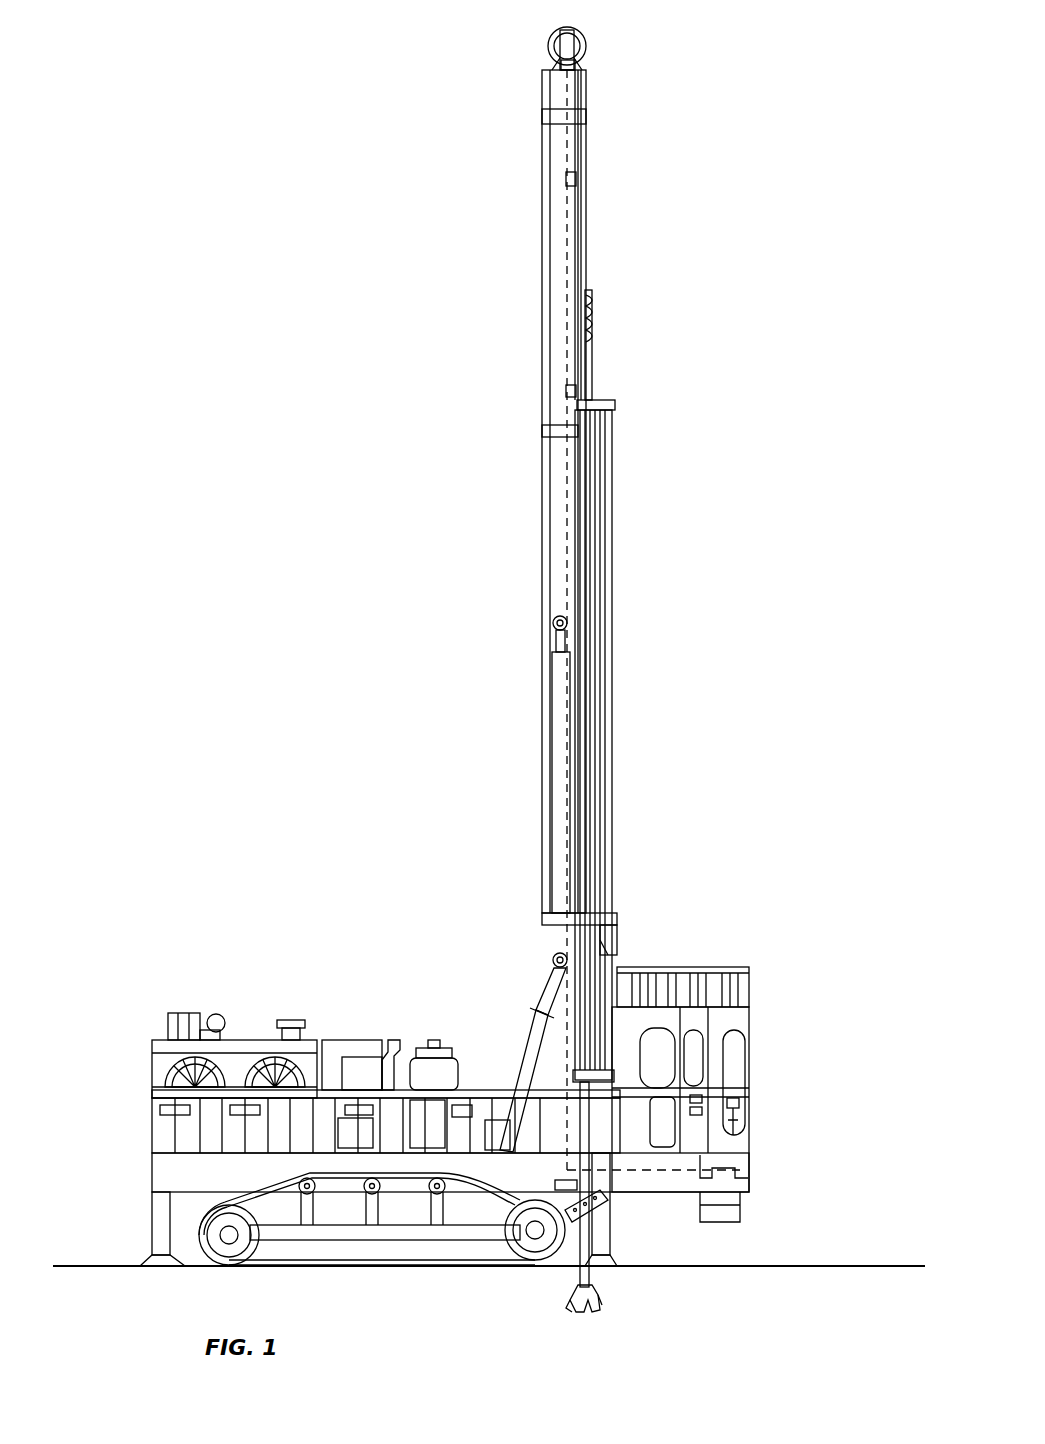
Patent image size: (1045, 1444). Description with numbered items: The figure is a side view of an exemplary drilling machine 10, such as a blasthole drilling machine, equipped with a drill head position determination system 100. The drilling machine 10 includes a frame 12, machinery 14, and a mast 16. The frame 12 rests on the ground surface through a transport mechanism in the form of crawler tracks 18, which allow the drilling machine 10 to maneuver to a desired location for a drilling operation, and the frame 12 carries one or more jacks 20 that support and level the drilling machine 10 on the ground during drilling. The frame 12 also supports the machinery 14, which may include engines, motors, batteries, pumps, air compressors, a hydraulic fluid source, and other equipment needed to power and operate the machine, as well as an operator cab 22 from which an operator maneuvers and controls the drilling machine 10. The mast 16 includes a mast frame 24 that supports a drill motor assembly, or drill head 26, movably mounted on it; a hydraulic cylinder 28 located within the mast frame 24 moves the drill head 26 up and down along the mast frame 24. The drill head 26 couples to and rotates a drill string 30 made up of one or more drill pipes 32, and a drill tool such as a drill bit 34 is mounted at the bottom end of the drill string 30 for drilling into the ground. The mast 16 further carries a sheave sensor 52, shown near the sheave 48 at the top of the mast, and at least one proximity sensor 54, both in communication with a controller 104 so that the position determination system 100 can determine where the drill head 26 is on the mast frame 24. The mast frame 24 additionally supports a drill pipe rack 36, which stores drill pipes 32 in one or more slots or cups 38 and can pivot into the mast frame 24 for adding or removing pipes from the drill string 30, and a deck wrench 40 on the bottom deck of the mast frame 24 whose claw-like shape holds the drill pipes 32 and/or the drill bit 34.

The drilling machine 10 is at (325, 565).
The frame 12 is at (165, 1170).
The machinery 14 is at (262, 990).
The mast 16 is at (542, 150).
The crawler tracks 18 is at (535, 1262).
The jacks 20 is at (160, 1228).
The operator cab 22 is at (725, 968).
The mast frame 24 is at (570, 160).
The drill head 26 is at (598, 300).
The hydraulic cylinder 28 is at (560, 688).
The drill string 30 is at (570, 1275).
The drill pipes 32 is at (592, 372).
The drill bit 34 is at (600, 1300).
The drill pipe rack 36 is at (632, 535).
The cups 38 is at (620, 965).
The deck wrench 40 is at (575, 1185).
The crown sheave 48 is at (588, 50).
The sheave sensor 52 is at (566, 68).
The proximity sensor 54 is at (570, 183).
The drill head position determination system 100 is at (775, 1030).
The controller 104 is at (740, 1103).